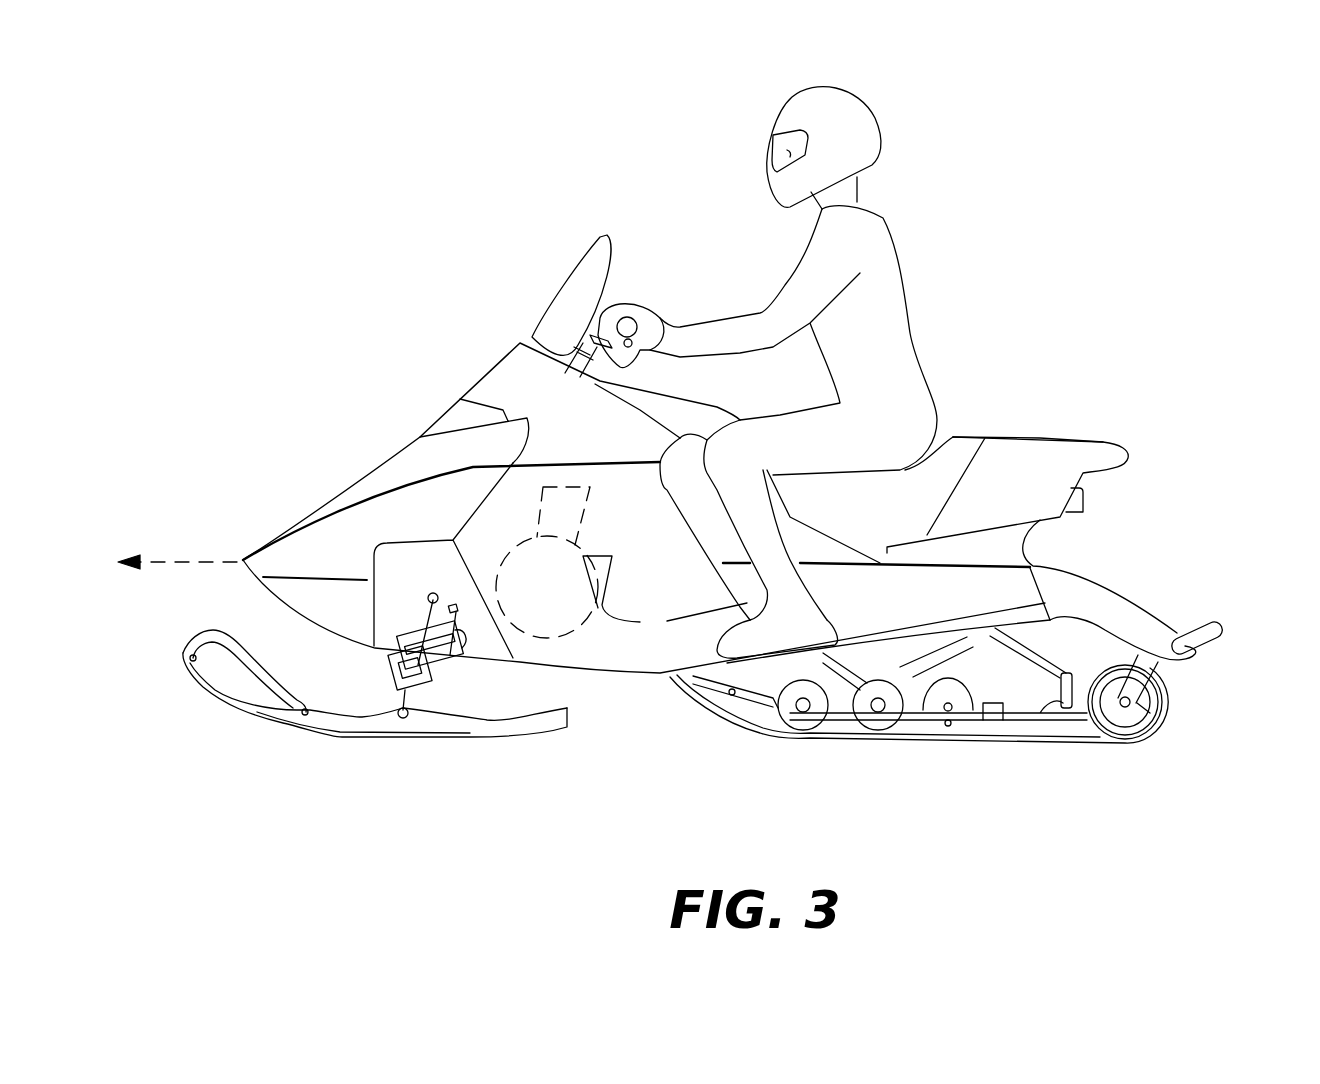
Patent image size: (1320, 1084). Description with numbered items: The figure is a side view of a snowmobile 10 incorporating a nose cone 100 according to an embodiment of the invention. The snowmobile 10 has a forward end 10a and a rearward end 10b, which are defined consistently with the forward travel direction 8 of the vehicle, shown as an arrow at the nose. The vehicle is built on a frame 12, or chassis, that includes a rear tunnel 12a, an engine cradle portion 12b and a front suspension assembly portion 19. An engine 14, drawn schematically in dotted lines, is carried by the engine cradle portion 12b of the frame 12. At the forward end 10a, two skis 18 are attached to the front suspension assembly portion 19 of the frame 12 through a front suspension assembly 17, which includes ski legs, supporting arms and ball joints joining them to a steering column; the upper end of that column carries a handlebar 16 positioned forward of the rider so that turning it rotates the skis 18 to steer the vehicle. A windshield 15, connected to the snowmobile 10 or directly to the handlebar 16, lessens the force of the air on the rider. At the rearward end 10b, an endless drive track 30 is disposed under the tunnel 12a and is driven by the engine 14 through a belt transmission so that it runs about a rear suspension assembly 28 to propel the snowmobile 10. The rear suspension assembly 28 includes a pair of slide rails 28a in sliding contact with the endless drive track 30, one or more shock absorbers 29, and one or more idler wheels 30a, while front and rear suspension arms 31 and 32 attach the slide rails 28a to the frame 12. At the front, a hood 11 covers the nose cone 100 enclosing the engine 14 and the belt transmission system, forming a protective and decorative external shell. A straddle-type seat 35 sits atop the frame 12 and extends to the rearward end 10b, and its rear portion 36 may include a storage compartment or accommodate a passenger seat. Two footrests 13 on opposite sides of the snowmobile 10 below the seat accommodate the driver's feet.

The forward travel direction 8 is at (173, 562).
The snowmobile 10 is at (372, 267).
The forward end 10a is at (288, 378).
The rearward end 10b is at (1077, 374).
The hood 11 is at (380, 470).
The frame 12 is at (1048, 553).
The rear tunnel 12a is at (946, 614).
The engine cradle portion 12b is at (617, 662).
The footrests 13 is at (745, 658).
The engine 14 is at (580, 550).
The windshield 15 is at (557, 298).
The handlebar 16 is at (637, 317).
The front suspension assembly 17 is at (461, 680).
The skis 18 is at (370, 737).
The front suspension assembly portion 19 is at (447, 584).
The rear suspension assembly 28 is at (840, 700).
The slide rails 28a is at (1047, 727).
The shock absorbers 29 is at (937, 655).
The endless drive track 30 is at (1130, 737).
The idler wheels 30a is at (1148, 710).
The front suspension arm 31 is at (850, 663).
The rear suspension arm 32 is at (1022, 618).
The straddle-type seat 35 is at (905, 514).
The rear portion of the seat 36 is at (1035, 494).
The nose cone 100 is at (360, 561).